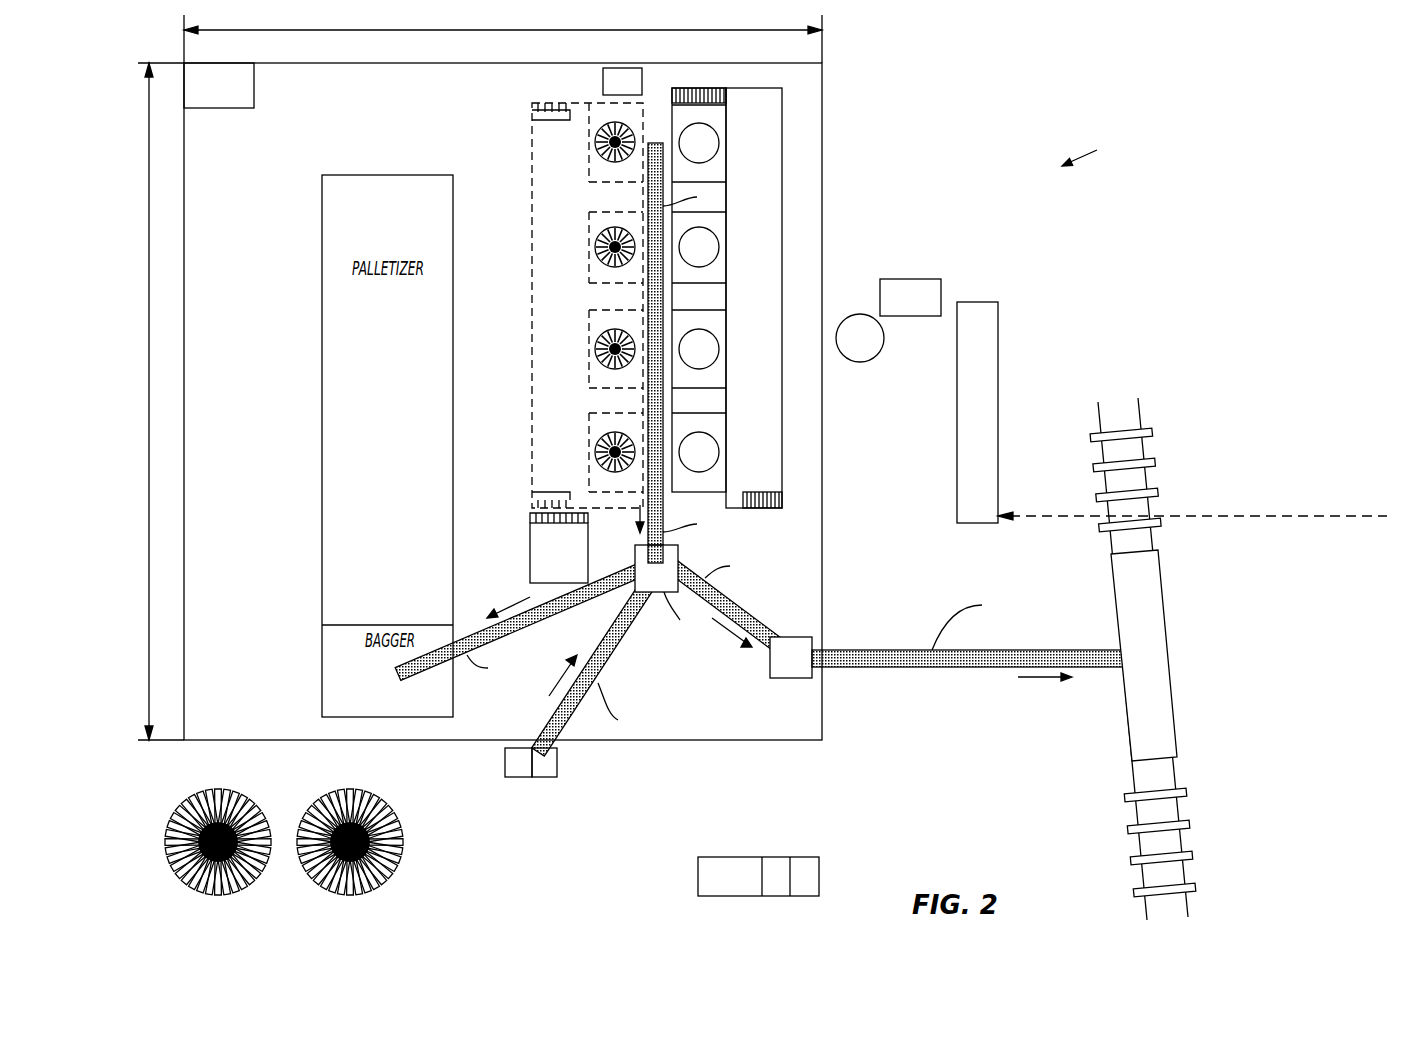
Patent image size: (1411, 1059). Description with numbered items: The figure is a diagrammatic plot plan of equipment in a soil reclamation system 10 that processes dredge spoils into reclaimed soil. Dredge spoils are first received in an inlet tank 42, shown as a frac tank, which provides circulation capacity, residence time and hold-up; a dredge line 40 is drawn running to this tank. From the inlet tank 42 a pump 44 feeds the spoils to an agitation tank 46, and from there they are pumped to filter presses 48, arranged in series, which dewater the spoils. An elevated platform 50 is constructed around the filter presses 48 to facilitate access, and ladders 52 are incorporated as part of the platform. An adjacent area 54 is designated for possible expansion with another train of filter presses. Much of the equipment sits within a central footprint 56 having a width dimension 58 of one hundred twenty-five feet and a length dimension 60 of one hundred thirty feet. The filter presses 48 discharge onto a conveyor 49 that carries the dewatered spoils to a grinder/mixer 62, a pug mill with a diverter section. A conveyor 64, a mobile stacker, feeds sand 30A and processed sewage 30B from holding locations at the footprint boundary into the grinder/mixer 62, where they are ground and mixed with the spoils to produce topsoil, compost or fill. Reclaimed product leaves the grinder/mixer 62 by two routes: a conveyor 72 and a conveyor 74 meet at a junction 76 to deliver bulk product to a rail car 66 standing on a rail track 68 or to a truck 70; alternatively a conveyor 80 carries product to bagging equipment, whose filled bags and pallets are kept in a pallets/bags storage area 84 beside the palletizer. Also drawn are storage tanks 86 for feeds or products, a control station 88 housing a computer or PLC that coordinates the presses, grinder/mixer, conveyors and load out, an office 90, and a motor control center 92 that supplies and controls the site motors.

The soil reclamation system 10 is at (1097, 148).
The sand 30A is at (503, 762).
The processed sewage 30B is at (558, 765).
The dredge line 40 is at (1240, 516).
The inlet tank 42 is at (998, 338).
The pump 44 is at (915, 279).
The agitation tank 46 is at (860, 362).
The filter presses 48 is at (782, 222).
The conveyor 49 is at (648, 405).
The elevated platform 50 is at (755, 148).
The ladders 52 is at (782, 500).
The area for possible expansion 54 is at (532, 145).
The central footprint 56 is at (411, 63).
The width dimension 58 is at (503, 33).
The length dimension 60 is at (148, 401).
The grinder/mixer 62 is at (635, 557).
The conveyor 64 is at (600, 672).
The rail car 66 is at (1160, 710).
The rail track 68 is at (1173, 842).
The truck 70 is at (726, 896).
The conveyor 72 is at (753, 612).
The conveyor 74 is at (977, 643).
The junction 76 is at (790, 680).
The conveyor 80 is at (530, 628).
The pallets/bags storage area 84 is at (239, 419).
The storage tanks 86 is at (213, 893).
The control station 88 is at (530, 555).
The office 90 is at (221, 70).
The motor control center 92 is at (628, 68).